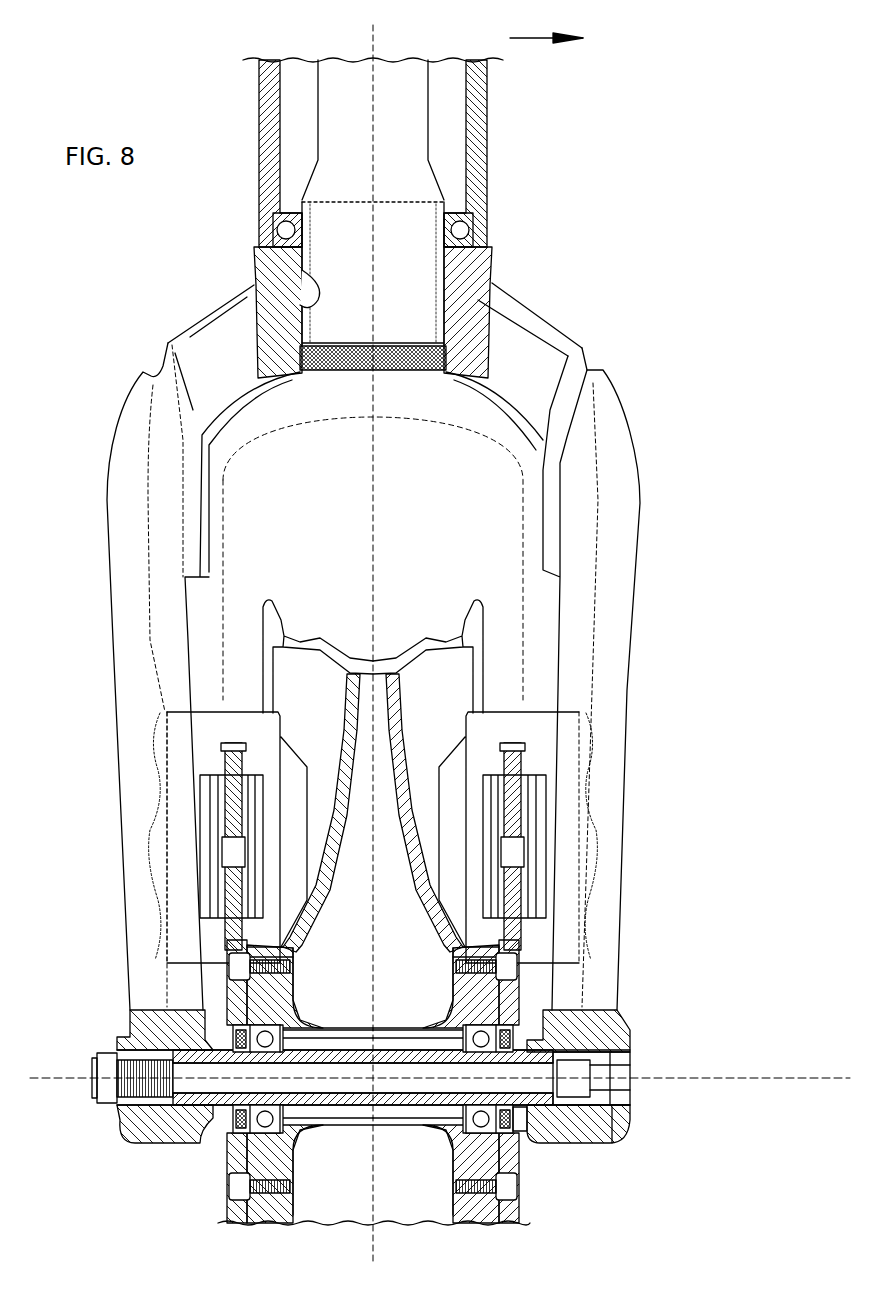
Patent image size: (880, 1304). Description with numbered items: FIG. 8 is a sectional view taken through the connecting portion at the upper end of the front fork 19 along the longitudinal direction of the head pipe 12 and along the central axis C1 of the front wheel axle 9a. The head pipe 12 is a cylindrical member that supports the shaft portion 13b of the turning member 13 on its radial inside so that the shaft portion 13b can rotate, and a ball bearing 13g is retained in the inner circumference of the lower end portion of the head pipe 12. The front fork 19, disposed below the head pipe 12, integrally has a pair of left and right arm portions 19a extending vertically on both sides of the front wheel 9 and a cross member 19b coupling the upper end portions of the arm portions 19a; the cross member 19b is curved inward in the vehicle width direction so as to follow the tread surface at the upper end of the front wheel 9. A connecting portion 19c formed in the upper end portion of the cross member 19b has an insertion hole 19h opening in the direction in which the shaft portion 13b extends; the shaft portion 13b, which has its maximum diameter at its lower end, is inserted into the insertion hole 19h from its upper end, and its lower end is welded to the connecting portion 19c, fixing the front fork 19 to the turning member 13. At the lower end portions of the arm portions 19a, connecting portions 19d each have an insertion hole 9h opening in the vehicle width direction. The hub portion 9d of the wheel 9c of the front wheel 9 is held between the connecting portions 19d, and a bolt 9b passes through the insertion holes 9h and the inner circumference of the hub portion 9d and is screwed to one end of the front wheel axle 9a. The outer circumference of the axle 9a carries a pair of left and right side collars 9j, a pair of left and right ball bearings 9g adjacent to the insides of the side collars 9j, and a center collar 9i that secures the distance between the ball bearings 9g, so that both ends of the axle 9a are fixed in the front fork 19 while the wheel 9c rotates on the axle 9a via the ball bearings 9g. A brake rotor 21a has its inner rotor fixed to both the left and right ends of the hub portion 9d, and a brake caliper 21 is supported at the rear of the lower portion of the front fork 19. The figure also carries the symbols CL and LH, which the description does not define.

The vehicle center line CL is at (380, 44).
The left-hand direction LH is at (563, 39).
The head pipe 12 is at (490, 110).
The turning member 13 is at (454, 130).
The shaft portion 13b is at (437, 152).
The ball bearing 13g is at (277, 221).
The insertion hole 19h is at (300, 285).
The connecting portion 19c is at (465, 272).
The cross member 19b is at (543, 305).
The front fork 19 is at (575, 318).
The arm portions 19a is at (120, 661).
The front wheel 9 is at (520, 432).
The wheel 9c is at (283, 605).
The brake caliper 21 is at (530, 710).
The brake rotor 21a is at (523, 802).
The hub portion 9d is at (345, 1028).
The center collar 9i is at (398, 1126).
The front wheel axle 9a is at (590, 1040).
The bolt 9b is at (90, 1060).
The central axis C1 is at (660, 1076).
The connecting portions 19d is at (133, 1127).
The ball bearings 9g is at (235, 1135).
The side collars 9j is at (522, 1115).
The insertion hole 9h is at (613, 1123).